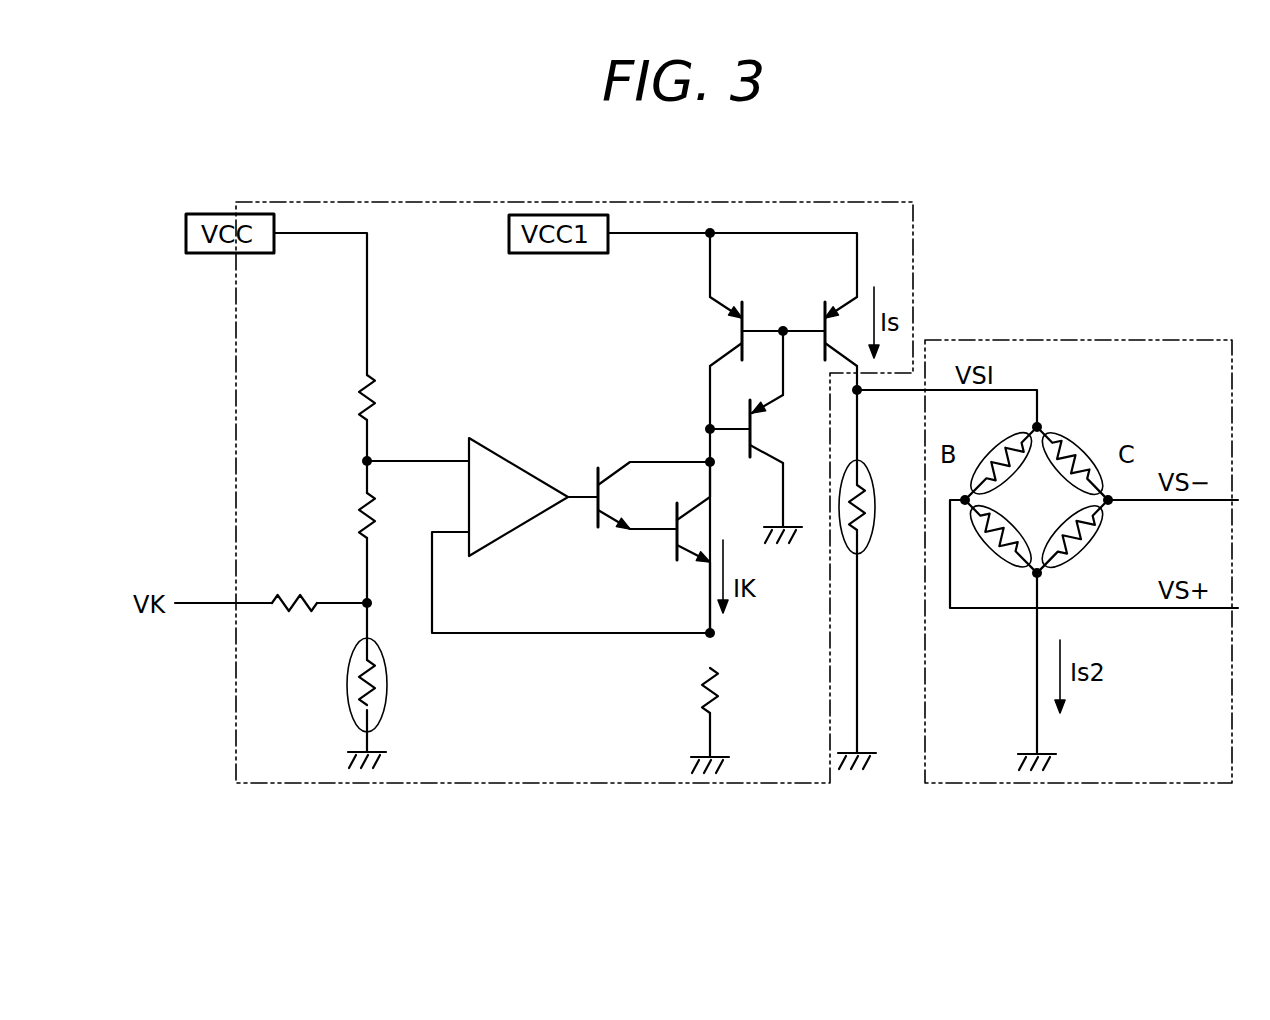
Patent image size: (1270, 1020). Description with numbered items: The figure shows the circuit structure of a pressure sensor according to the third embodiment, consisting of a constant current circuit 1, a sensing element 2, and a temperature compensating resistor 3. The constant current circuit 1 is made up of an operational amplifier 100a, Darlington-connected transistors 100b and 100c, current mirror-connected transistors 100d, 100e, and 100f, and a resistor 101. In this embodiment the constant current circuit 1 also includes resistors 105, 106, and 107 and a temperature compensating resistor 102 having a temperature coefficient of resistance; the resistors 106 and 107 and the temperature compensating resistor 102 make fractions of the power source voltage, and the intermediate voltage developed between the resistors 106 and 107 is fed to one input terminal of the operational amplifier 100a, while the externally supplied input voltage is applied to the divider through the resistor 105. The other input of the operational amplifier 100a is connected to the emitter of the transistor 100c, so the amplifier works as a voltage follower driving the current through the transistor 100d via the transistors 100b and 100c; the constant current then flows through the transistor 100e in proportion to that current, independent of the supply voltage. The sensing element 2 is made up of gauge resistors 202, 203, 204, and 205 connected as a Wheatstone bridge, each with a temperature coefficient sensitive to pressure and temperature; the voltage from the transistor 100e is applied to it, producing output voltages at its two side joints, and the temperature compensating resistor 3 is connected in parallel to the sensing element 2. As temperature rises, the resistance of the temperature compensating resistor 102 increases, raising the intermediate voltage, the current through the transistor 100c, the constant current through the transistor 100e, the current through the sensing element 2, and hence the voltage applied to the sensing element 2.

The constant current circuit 1 is at (880, 202).
The sensing element 2 is at (1129, 340).
The temperature compensating resistor 3 is at (876, 507).
The operational amplifier 100a is at (518, 459).
The transistor 100b is at (596, 466).
The transistor 100c is at (672, 520).
The transistor 100d is at (730, 302).
The transistor 100e is at (838, 302).
The transistor 100f is at (775, 398).
The resistor 101 is at (718, 690).
The temperature compensating resistor 102 is at (388, 681).
The resistor 105 is at (295, 595).
The resistor 106 is at (363, 390).
The resistor 107 is at (363, 508).
The gauge resistor 202 is at (976, 455).
The gauge resistor 203 is at (1094, 455).
The gauge resistor 204 is at (984, 556).
The gauge resistor 205 is at (1072, 551).